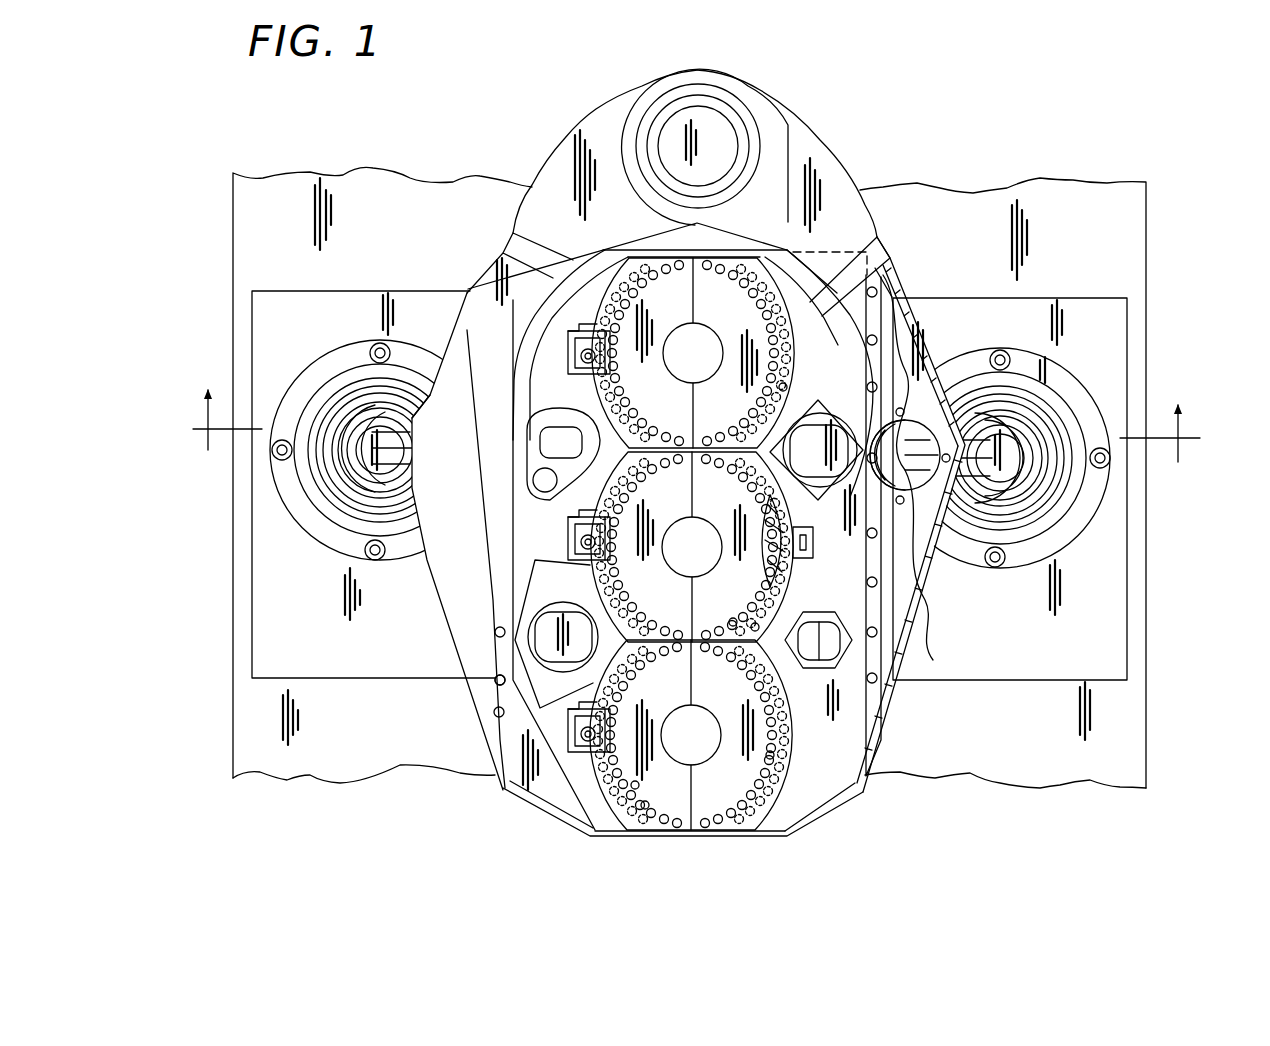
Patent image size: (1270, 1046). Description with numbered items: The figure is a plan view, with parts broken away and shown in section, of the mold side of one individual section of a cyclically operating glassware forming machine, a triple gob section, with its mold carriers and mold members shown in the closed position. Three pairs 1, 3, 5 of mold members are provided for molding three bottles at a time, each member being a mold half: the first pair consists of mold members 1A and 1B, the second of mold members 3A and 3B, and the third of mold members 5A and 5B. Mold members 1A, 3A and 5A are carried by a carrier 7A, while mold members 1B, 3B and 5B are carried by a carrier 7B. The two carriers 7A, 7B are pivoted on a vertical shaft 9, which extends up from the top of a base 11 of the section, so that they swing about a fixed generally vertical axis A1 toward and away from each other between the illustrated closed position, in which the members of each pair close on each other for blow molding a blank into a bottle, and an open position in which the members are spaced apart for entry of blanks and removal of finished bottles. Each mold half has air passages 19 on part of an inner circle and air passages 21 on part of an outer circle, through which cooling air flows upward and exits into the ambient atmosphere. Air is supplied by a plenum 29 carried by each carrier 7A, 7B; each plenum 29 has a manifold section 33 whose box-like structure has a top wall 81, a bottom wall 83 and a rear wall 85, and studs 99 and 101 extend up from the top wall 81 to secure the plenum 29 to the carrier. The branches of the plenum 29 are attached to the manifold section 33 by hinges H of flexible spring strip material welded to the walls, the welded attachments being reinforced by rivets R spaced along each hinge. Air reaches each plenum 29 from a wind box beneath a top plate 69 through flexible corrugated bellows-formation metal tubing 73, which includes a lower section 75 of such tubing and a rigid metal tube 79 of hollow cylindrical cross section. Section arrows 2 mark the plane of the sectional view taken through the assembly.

The first pair of mold members 1 is at (597, 397).
The mold member 1A is at (540, 308).
The mold member 1B is at (800, 343).
The section line 2- 2 is at (690, 432).
The second pair of mold members 3 is at (560, 508).
The mold member 3A is at (590, 583).
The mold member 3B is at (785, 618).
The third pair of mold members 5 is at (560, 780).
The mold member 5A is at (620, 830).
The mold member 5B is at (773, 828).
The carrier 7A is at (573, 142).
The carrier 7B is at (842, 160).
The vertical shaft 9 is at (673, 123).
The first fixed generally vertical axis A1 is at (700, 145).
The base 11 is at (228, 190).
The top plate 69 is at (1118, 735).
The air passages 19 is at (645, 805).
The air passages 21 is at (786, 386).
The plenum 29 is at (467, 710).
The manifold section 33 is at (437, 600).
The flexible corrugated bellows-formation metal tubing 73 is at (338, 403).
The lower section of flexible corrugated bellows-formation metal tubing 75 is at (343, 487).
The rigid metal tube 79 is at (527, 440).
The top wall 81 is at (450, 548).
The bottom wall 83 is at (920, 573).
The rear wall 85 is at (925, 350).
The stud 99 is at (545, 645).
The stud 101 is at (540, 447).
The hinge H is at (480, 678).
The rivet R is at (487, 700).